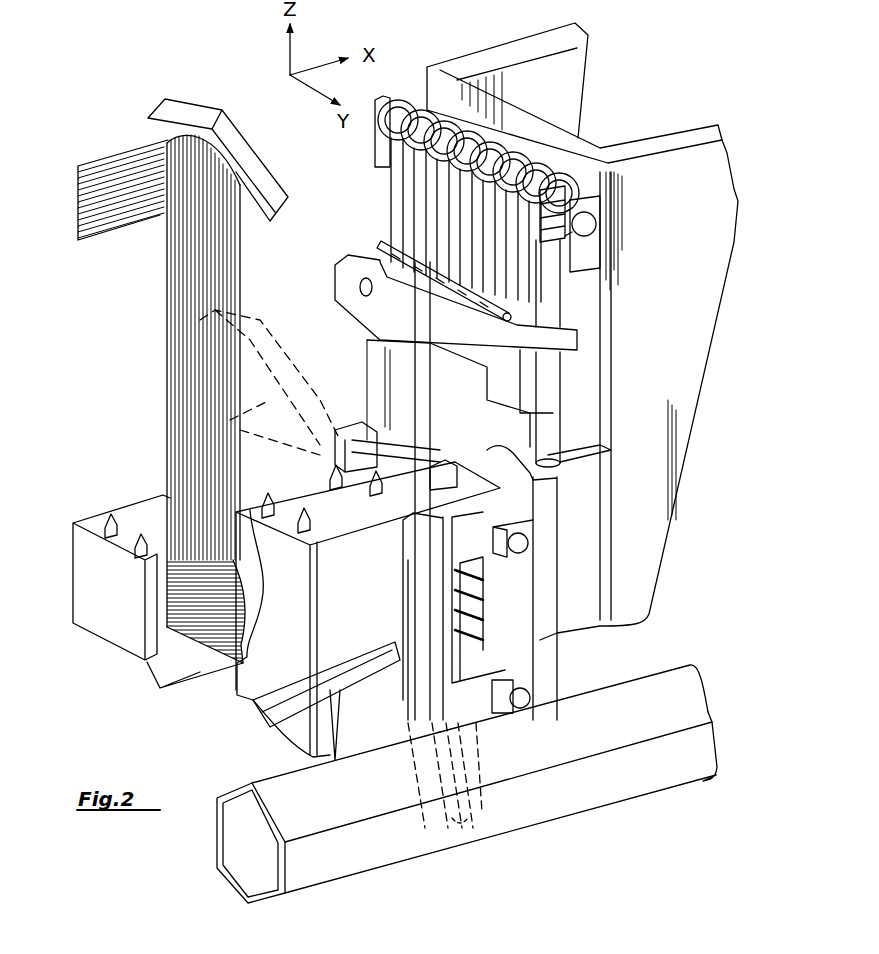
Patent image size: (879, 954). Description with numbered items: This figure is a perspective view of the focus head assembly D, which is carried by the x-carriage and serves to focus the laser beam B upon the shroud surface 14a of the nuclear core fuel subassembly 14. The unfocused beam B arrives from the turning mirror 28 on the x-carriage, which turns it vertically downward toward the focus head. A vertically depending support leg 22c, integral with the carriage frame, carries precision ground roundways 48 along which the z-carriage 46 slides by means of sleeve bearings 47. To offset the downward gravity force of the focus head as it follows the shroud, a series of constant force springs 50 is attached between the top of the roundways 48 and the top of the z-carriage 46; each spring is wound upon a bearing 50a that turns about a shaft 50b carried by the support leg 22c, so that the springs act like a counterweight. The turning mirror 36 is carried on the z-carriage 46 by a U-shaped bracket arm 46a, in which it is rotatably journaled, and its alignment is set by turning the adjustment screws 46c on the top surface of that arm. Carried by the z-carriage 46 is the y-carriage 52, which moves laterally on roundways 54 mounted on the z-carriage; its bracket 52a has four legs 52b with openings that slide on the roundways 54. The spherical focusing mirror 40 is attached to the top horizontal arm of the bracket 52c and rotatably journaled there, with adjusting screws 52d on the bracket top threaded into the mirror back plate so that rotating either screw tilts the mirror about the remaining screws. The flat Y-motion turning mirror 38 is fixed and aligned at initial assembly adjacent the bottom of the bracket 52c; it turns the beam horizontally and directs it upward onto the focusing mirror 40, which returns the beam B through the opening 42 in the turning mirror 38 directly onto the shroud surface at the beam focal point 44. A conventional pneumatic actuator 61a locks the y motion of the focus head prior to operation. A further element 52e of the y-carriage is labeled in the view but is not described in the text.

The nuclear core fuel subassembly 14 is at (570, 798).
The shroud surface 14a is at (283, 802).
The vertically depending support leg 22c is at (679, 350).
The turning mirror 28 is at (247, 143).
The turning mirror 36 is at (193, 665).
The Y-motion flat turning mirror 38 is at (283, 700).
The spherical focusing mirror 40 is at (332, 548).
The opening 42 is at (339, 690).
The beam focal point 44 is at (330, 762).
The z-carriage 46 is at (553, 677).
The U-shaped bracket arm 46a is at (95, 562).
The adjustment screws 46c is at (90, 513).
The sleeve bearings 47 is at (585, 472).
The precision ground roundways 48 is at (551, 292).
The constant force springs 50 is at (402, 195).
The bearing 50a is at (565, 192).
The shaft 50b is at (600, 220).
The y-carriage 52 is at (455, 705).
The bracket 52a is at (423, 540).
The legs 52b is at (525, 702).
The bracket 52c is at (252, 715).
The adjusting screws 52d is at (273, 484).
The carriage block 52e is at (452, 472).
The roundways 54 is at (363, 443).
The pneumatic actuator 61a is at (477, 481).
The laser beam B is at (118, 156).
The focus head assembly D is at (695, 429).